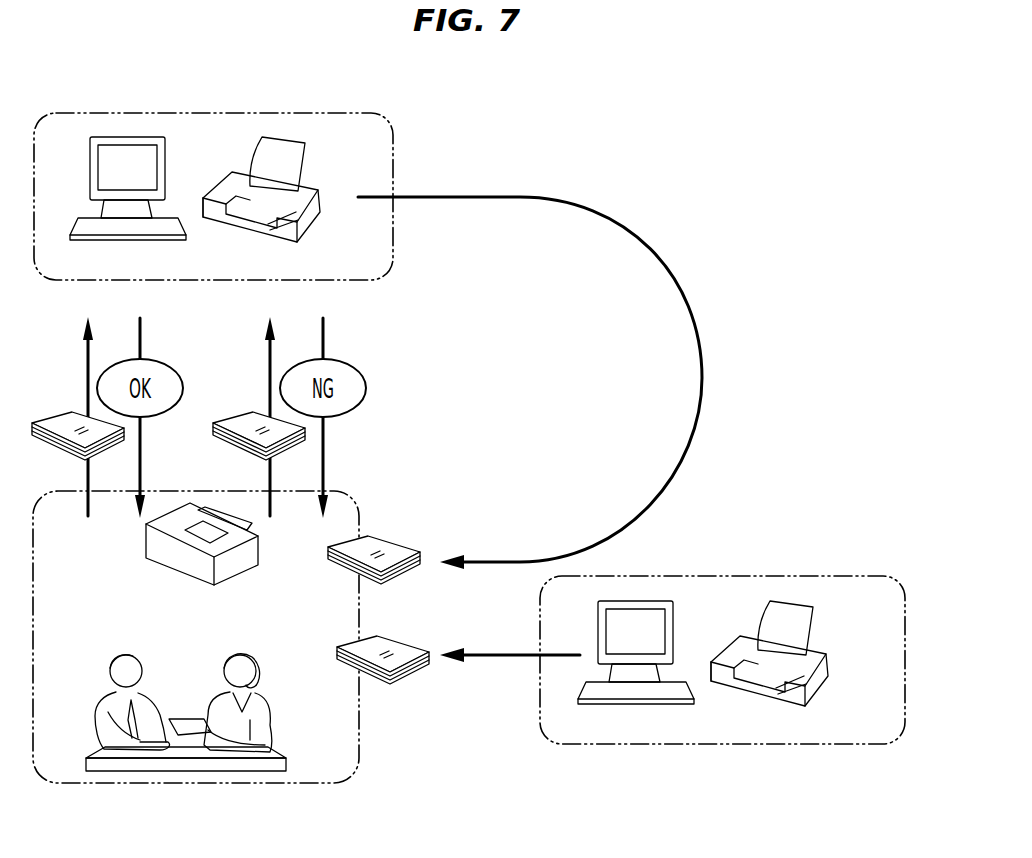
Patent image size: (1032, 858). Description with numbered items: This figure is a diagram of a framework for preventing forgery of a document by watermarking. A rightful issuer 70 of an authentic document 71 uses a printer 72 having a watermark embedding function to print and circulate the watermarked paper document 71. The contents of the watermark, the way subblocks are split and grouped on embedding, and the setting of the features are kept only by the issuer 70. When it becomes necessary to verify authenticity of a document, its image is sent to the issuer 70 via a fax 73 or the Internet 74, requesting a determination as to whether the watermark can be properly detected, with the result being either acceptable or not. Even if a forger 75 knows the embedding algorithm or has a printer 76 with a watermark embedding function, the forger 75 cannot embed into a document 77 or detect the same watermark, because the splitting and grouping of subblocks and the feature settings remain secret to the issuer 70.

The issuer 70 is at (222, 338).
The authentic document 71 is at (397, 542).
The printer 72 is at (333, 273).
The fax 73 is at (156, 561).
The Internet 74 is at (196, 637).
The forger 75 is at (722, 678).
The printer 76 is at (773, 670).
The document 77 is at (414, 672).